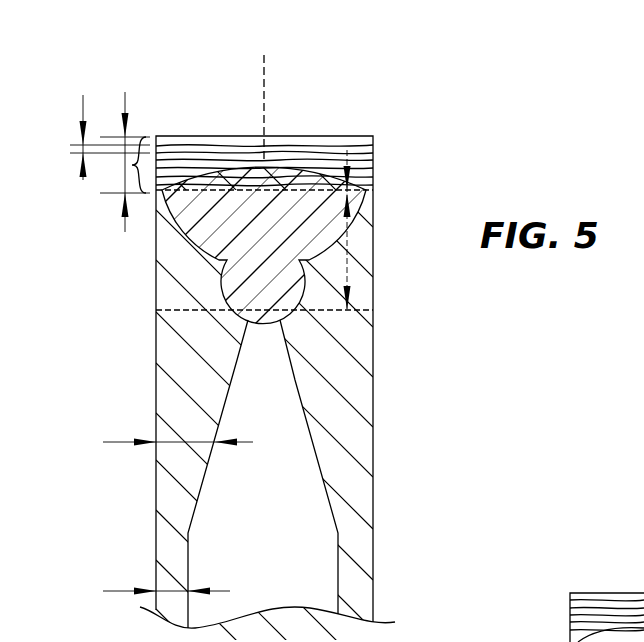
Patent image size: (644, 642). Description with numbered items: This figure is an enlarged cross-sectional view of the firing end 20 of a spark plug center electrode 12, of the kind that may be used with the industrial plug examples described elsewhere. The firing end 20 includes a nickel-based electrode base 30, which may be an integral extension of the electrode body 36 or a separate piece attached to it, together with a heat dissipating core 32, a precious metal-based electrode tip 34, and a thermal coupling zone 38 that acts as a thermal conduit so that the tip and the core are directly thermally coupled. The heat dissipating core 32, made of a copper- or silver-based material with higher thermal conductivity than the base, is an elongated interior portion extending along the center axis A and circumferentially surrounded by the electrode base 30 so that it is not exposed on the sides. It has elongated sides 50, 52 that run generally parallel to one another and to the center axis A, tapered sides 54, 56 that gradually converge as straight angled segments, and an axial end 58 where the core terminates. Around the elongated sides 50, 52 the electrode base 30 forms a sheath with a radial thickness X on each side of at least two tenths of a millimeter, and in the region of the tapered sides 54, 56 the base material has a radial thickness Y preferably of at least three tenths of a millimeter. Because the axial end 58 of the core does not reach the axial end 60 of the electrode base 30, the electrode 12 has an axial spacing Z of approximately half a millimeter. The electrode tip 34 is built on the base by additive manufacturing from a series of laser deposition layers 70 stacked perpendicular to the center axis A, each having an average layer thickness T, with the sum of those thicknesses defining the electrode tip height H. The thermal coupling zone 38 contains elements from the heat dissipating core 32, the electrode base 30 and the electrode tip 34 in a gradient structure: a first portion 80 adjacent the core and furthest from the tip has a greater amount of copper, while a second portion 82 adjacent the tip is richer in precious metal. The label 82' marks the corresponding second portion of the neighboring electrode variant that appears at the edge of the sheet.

The center electrode 12 is at (412, 307).
The firing end 20 is at (155, 82).
The electrode base 30 is at (185, 388).
The heat dissipating core 32 is at (278, 458).
The electrode tip 34 is at (362, 150).
The electrode body 36 is at (357, 495).
The thermal coupling zone 38 is at (158, 216).
The elongated side 50 is at (190, 557).
The elongated side 52 is at (340, 572).
The tapered side 54 is at (203, 485).
The tapered side 56 is at (308, 418).
The axial end 58 is at (263, 316).
The axial end 60 is at (370, 186).
The laser deposition layers 70 is at (133, 163).
The first portion 80 is at (263, 293).
The second portion 82 is at (234, 149).
The top surface (alternate) 82' is at (574, 617).
The center axis A is at (266, 92).
The average layer thickness T is at (83, 107).
The electrode tip height H is at (125, 232).
The axial spacing Z is at (347, 256).
The radial thickness Y is at (112, 445).
The radial thickness X is at (113, 592).